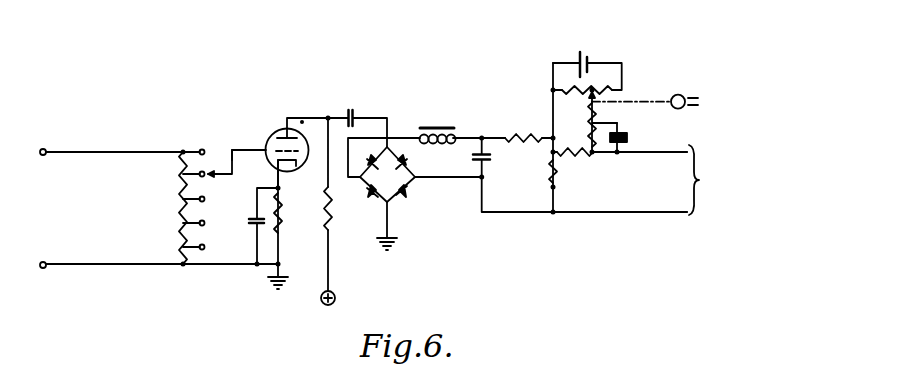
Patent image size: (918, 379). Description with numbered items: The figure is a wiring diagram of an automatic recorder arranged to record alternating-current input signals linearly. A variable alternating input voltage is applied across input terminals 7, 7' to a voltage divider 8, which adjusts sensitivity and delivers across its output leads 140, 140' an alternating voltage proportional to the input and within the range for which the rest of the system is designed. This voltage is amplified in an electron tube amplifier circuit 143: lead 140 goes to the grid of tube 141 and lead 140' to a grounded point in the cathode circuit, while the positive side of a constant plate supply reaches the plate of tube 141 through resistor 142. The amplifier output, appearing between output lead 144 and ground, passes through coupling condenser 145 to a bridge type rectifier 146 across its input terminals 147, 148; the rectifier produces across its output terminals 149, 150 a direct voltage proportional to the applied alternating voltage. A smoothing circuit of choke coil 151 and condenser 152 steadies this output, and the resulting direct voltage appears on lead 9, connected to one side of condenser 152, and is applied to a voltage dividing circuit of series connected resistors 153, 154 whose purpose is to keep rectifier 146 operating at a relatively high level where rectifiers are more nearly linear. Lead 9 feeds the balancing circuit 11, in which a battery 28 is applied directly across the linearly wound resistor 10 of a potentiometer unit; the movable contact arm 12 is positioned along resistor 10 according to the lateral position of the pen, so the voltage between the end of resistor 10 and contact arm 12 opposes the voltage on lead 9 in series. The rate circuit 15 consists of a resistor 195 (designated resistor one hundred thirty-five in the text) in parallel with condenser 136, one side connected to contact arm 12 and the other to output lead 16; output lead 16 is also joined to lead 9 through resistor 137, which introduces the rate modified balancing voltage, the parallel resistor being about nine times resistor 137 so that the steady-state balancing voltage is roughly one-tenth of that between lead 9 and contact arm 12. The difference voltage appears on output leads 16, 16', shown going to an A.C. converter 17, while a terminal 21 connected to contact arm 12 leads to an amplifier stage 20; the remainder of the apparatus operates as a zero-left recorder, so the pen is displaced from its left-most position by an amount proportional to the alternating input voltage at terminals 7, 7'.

The input terminal 7 is at (41, 167).
The input terminal 7' is at (37, 250).
The voltage divider 8 is at (147, 213).
The output lead 140 is at (230, 137).
The output lead 140' is at (216, 282).
The tube 141 is at (296, 174).
The resistor 142 is at (330, 220).
The electron tube amplifier circuit 143 is at (302, 122).
The output lead 144 is at (335, 112).
The coupling condenser 145 is at (360, 112).
The bridge type rectifier 146 is at (402, 182).
The input terminal 147 is at (395, 142).
The input terminal 148 is at (392, 206).
The output terminal 149 is at (363, 188).
The output terminal 150 is at (415, 176).
The choke coil 151 is at (465, 120).
The condenser 152 is at (490, 168).
The resistor 153 is at (504, 134).
The lead 9 is at (546, 136).
The resistor 154 is at (557, 186).
The resistor 137 is at (575, 157).
The linearly wound resistor 10 is at (573, 86).
The battery 28 is at (589, 62).
The balancing circuit 11 is at (658, 73).
The movable contact arm 12 is at (591, 103).
The resistor 195 is at (590, 130).
The condenser 136 is at (628, 137).
The circuit 15 is at (647, 126).
The output terminal 21 is at (681, 94).
The amplifier stage 20 is at (746, 102).
The output lead 16 is at (663, 164).
The conductor 16' is at (663, 201).
The AC converter 17 is at (732, 177).